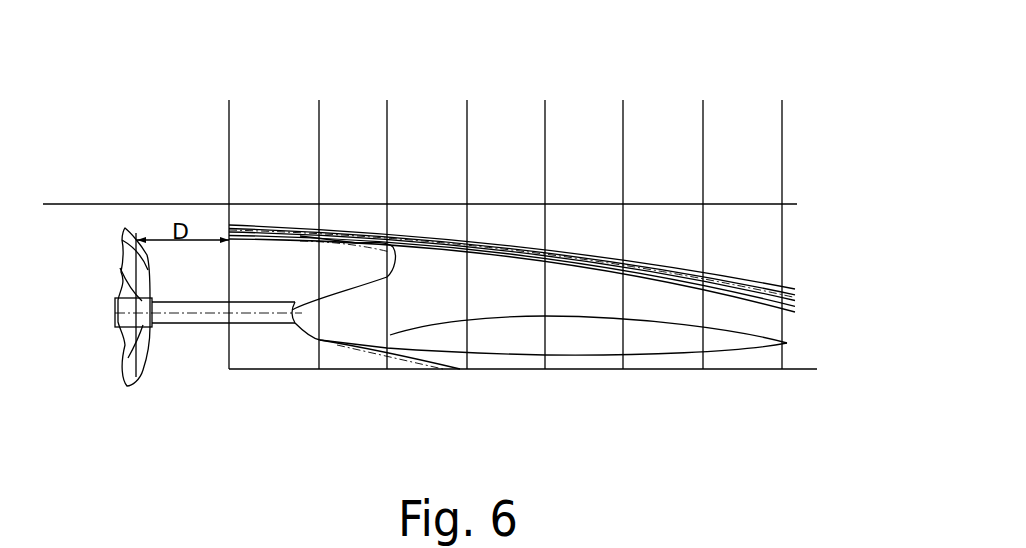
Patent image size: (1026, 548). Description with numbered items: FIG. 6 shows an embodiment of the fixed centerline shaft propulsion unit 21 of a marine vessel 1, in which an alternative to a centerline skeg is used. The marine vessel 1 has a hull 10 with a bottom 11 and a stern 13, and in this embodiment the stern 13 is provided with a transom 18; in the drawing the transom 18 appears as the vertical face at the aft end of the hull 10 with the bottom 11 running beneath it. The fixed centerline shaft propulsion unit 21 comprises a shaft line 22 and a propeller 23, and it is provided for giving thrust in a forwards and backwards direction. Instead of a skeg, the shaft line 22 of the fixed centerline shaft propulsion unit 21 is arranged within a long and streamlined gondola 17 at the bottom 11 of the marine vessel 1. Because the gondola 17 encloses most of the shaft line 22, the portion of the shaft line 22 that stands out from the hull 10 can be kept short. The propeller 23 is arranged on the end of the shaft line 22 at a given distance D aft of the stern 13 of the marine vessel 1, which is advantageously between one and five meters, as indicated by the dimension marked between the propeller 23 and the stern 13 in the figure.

The marine vessel 1 is at (805, 122).
The hull 10 is at (484, 166).
The bottom 11 is at (662, 390).
The stern 13 is at (213, 132).
The gondola 17 is at (530, 339).
The transom 18 is at (205, 159).
The fixed centerline shaft propulsion unit 21 is at (265, 340).
The shaft line 22 is at (177, 323).
The propeller 23 is at (127, 355).